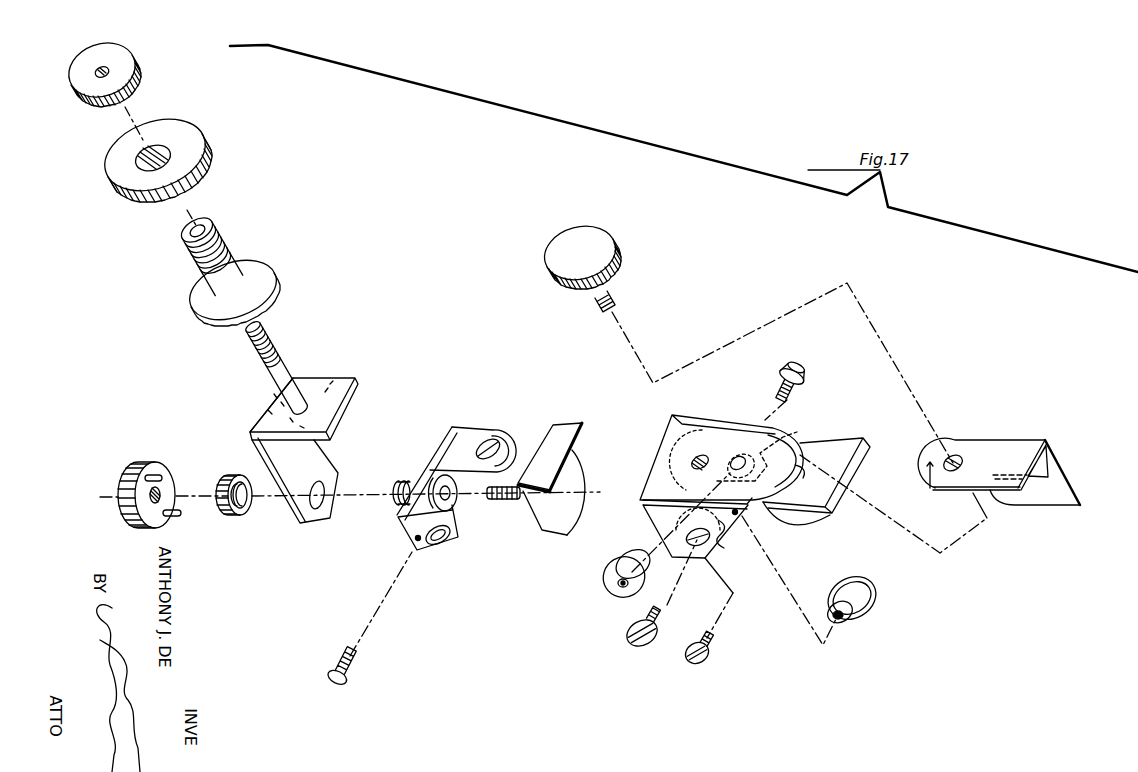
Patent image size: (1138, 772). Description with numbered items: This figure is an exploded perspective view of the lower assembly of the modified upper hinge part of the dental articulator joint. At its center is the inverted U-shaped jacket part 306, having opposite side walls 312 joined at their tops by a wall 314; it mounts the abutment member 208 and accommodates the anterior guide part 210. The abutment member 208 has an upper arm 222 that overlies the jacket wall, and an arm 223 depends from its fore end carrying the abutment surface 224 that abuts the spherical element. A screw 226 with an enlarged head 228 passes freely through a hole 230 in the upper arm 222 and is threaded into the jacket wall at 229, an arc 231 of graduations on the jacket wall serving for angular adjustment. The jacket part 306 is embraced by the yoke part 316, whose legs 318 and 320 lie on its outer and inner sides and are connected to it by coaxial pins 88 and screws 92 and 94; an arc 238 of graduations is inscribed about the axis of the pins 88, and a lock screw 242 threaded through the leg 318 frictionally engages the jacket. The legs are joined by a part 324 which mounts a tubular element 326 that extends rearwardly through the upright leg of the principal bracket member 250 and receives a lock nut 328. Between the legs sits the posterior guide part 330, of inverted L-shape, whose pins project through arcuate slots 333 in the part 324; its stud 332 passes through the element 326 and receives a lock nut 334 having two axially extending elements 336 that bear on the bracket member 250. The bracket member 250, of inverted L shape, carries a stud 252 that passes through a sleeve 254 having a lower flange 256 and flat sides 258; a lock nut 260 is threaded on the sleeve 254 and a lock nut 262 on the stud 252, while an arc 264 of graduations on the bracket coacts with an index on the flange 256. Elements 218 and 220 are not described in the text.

The pins 88 is at (605, 590).
The screw 92 is at (645, 647).
The screw 94 is at (808, 372).
The abutment member 208 is at (1018, 468).
The anterior guide part 210 is at (822, 479).
The rounded portion 218 is at (810, 528).
The screw 220 is at (712, 652).
The upper arm 222 is at (989, 440).
The arm 223 is at (1072, 480).
The abutment surface 224 is at (1018, 507).
The screw 226 is at (601, 249).
The enlarged head 228 is at (592, 233).
The threaded hole 229 is at (707, 452).
The hole 230 is at (955, 455).
The arc of graduations 231 is at (700, 478).
The arc of graduations 238 is at (662, 525).
The lock screw 242 is at (337, 690).
The principal bracket member 250 is at (276, 448).
The stud 252 is at (277, 347).
The sleeve 254 is at (217, 258).
The flange 256 is at (267, 262).
The flat sides 258 is at (213, 222).
The lock nut 260 is at (207, 141).
The lock nut 262 is at (136, 74).
The arc of graduations 264 is at (272, 420).
The jacket part 306 is at (709, 422).
The side walls 312 is at (786, 428).
The wall 314 is at (798, 472).
The yoke part 316 is at (436, 482).
The leg 318 is at (430, 553).
The leg 320 is at (480, 428).
The part 324 is at (447, 428).
The tubular element 326 is at (405, 481).
The lock nut 328 is at (245, 518).
The posterior guide part 330 is at (544, 436).
The stud 332 is at (503, 507).
The arcuate slot 333 is at (493, 445).
The lock nut 334 is at (132, 496).
The axially extending elements 336 is at (157, 473).